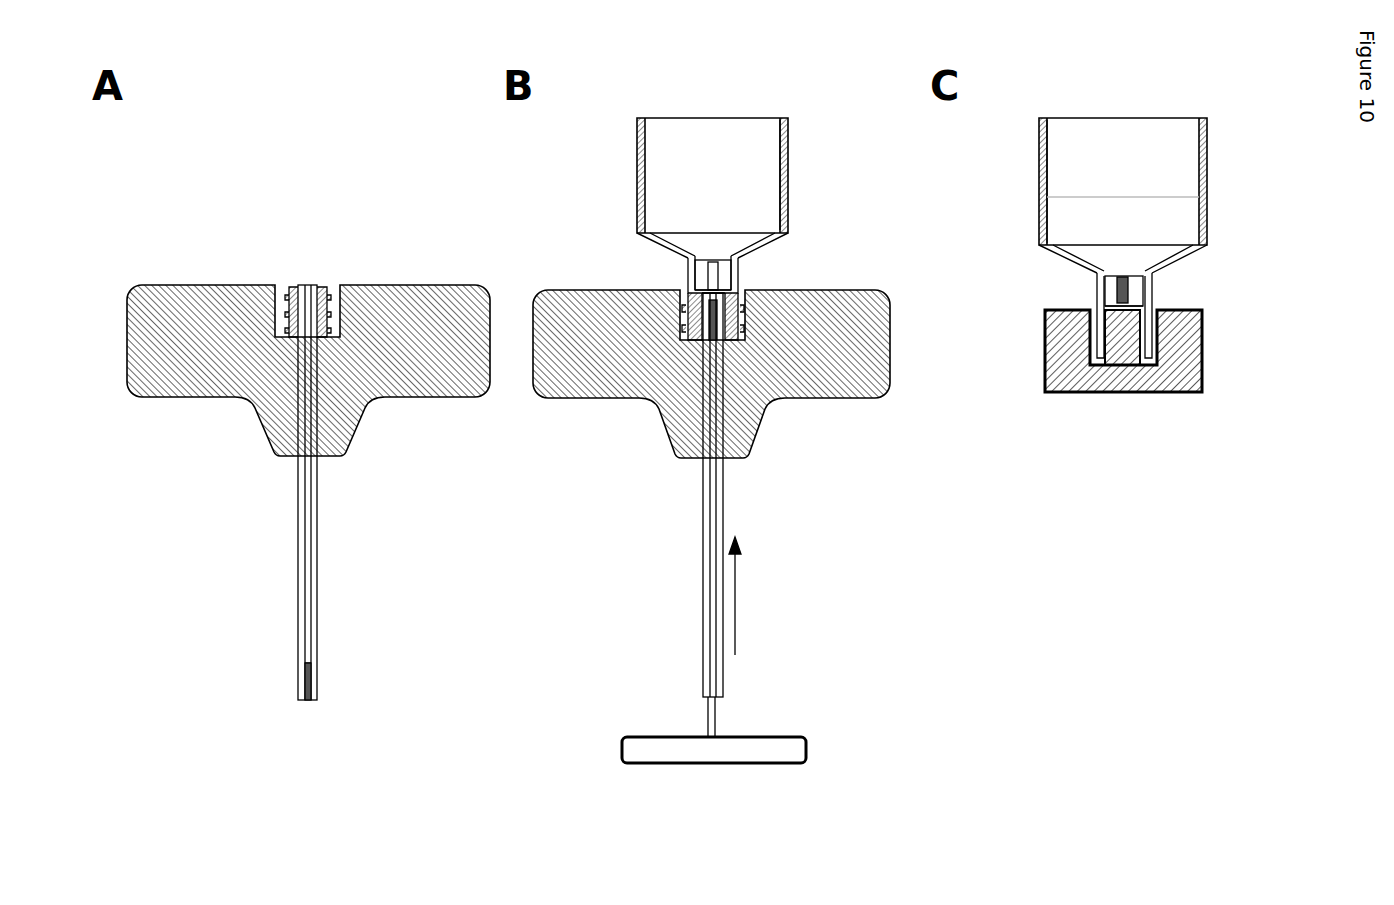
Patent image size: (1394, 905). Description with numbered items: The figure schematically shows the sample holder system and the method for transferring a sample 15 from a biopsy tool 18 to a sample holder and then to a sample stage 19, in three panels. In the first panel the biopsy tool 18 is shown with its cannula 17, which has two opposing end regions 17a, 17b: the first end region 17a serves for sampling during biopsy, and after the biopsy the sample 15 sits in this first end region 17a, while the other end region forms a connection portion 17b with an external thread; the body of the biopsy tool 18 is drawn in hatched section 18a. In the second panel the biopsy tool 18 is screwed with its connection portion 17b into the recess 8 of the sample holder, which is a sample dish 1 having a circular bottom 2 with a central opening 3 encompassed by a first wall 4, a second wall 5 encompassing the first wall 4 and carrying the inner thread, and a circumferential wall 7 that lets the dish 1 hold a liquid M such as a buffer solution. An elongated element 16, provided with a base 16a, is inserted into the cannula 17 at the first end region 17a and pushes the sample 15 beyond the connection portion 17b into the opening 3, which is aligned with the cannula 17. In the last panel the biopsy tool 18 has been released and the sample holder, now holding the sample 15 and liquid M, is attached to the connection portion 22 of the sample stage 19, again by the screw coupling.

The sample dish 1 is at (800, 148).
The circular bottom 2 is at (762, 247).
The opening 3 is at (712, 275).
The first circumferential wall 4 is at (720, 275).
The second wall 5 is at (733, 295).
The circumferential wall 7 is at (787, 203).
The recess 8 is at (692, 300).
The sample 15 is at (300, 678).
The elongated element 16 is at (710, 715).
The plunger base 16a is at (633, 747).
The cannula 17 is at (308, 537).
The first end region 17a is at (312, 677).
The connection portion 17b is at (292, 293).
The biopsy tool 18 is at (238, 436).
The holder body hatched section 18a is at (432, 352).
The sample stage 19 is at (1131, 380).
The connection portion 22 is at (1200, 392).
The liquid medium M is at (1142, 225).